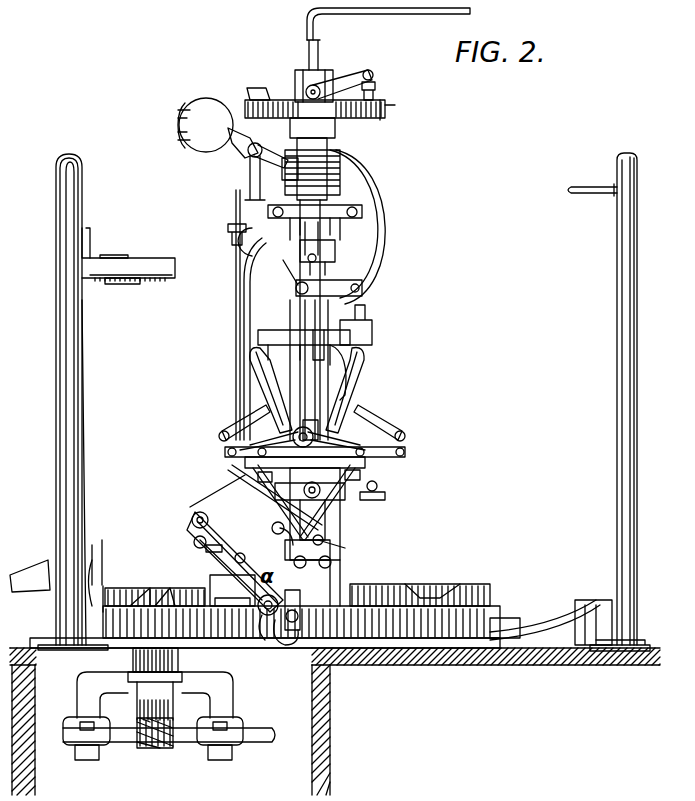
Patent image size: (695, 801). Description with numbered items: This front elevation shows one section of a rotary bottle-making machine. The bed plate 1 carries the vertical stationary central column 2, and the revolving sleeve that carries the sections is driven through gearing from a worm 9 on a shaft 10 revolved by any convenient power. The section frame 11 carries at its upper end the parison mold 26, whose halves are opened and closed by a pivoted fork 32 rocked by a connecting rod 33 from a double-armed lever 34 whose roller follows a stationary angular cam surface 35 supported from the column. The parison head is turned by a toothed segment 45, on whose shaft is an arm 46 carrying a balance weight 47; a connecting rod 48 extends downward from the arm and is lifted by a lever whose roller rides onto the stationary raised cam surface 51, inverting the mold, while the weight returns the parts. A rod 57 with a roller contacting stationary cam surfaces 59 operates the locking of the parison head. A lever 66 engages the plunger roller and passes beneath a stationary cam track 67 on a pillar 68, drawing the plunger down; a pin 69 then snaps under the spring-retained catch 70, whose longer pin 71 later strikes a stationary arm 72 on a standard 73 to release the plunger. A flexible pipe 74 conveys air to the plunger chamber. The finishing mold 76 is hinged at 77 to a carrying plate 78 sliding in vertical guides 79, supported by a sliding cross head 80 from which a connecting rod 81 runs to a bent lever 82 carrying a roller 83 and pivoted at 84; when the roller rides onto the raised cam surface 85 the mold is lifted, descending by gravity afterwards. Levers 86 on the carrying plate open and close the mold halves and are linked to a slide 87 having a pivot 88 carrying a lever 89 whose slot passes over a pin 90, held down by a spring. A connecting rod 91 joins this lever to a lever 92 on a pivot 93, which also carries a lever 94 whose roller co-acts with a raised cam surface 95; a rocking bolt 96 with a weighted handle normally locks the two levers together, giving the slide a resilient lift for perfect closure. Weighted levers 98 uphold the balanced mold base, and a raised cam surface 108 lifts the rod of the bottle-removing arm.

The bed plate 1 is at (524, 608).
The stationary central column 2 is at (305, 80).
The worm 9 is at (168, 742).
The shaft 10 is at (256, 742).
The frame 11 is at (232, 506).
The parison mold 26 is at (336, 147).
The pivoted fork 32 is at (333, 320).
The connecting rod 33 is at (378, 283).
The double-armed lever 34 is at (346, 84).
The stationary angular cam surface 35 is at (330, 104).
The toothed segment 45 is at (252, 191).
The arm 46 is at (267, 149).
The balance weight 47 is at (207, 150).
The connecting rod 48 is at (244, 288).
The stationary raised cam surface 51 is at (208, 581).
The rod 57 is at (236, 335).
The stationary cam surfaces 59 is at (168, 604).
The lever 66 is at (350, 252).
The stationary cam track 67 is at (124, 282).
The pillar 68 is at (68, 365).
The pin 69 is at (358, 220).
The spring-retained catch 70 is at (294, 285).
The pin 71 is at (318, 256).
The stationary arm 72 is at (587, 193).
The standard 73 is at (623, 286).
The flexible pipe 74 is at (228, 229).
The finishing mold 76 is at (360, 377).
The hinge 77 is at (376, 427).
The carrying plate 78 is at (378, 487).
The vertical guides 79 is at (352, 470).
The sliding cross head 80 is at (340, 521).
The connecting rod 81 is at (252, 485).
The bent lever 82 is at (250, 601).
The roller 83 is at (285, 647).
The pivot 84 is at (192, 526).
The raised cam surface 85 is at (94, 594).
The levers 86 is at (228, 448).
The slide 87 is at (330, 539).
The pivot 88 is at (335, 559).
The lever 89 is at (325, 612).
The pin 90 is at (286, 556).
The connecting rod 91 is at (340, 399).
The lever 92 is at (268, 636).
The pivot 93 is at (193, 508).
The lever 94 is at (198, 538).
The raised cam surface 95 is at (96, 540).
The rocking bolt 96 is at (270, 516).
The weighted levers 98 is at (385, 498).
The raised cam surface 108 is at (492, 614).